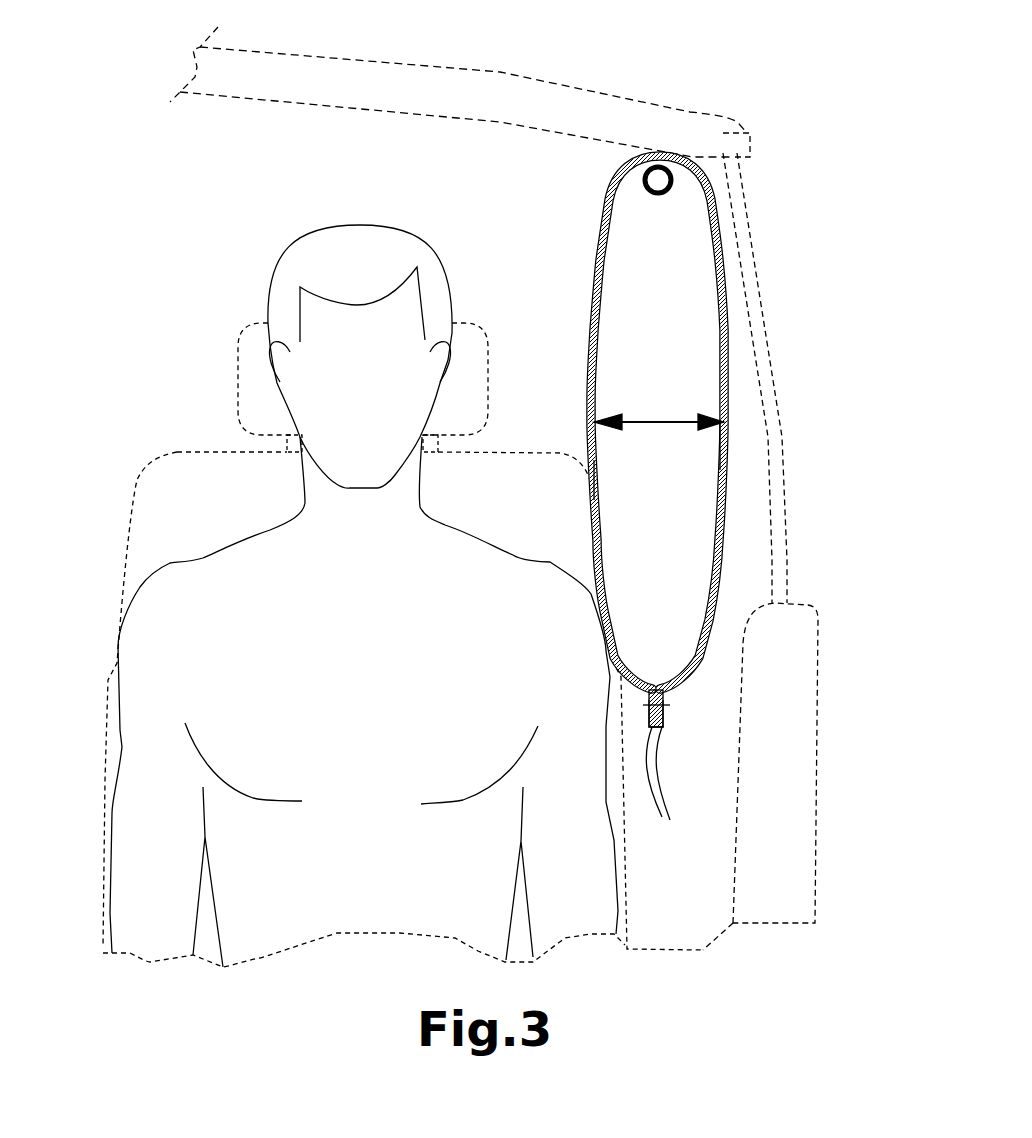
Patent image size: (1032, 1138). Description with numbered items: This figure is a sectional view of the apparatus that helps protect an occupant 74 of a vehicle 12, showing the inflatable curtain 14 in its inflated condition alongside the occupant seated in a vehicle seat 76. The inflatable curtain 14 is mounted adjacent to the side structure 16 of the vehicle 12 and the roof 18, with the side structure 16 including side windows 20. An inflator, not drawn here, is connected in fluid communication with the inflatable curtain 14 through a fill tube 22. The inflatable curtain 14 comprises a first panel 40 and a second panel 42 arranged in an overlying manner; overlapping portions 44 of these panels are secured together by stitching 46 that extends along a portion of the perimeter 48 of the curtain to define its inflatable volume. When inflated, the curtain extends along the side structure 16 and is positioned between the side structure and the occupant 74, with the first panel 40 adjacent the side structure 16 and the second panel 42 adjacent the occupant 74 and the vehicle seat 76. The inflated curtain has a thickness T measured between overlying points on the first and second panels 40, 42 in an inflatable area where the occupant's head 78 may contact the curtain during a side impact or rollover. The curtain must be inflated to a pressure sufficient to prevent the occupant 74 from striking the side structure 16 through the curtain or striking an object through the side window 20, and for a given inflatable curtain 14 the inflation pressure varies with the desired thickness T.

The vehicle 12 is at (755, 98).
The inflatable curtain 14 is at (597, 322).
The side structure 16 is at (750, 140).
The roof 18 is at (480, 92).
The side windows 20 is at (778, 387).
The fill tube 22 is at (646, 192).
The first panel 40 is at (722, 445).
The second panel 42 is at (590, 480).
The overlapping portions 44 is at (674, 783).
The stitching 46 is at (645, 713).
The perimeter 48 is at (665, 717).
The occupant 74 is at (387, 265).
The vehicle seat 76 is at (173, 475).
The occupant's head 78 is at (347, 278).
The thickness T is at (668, 418).